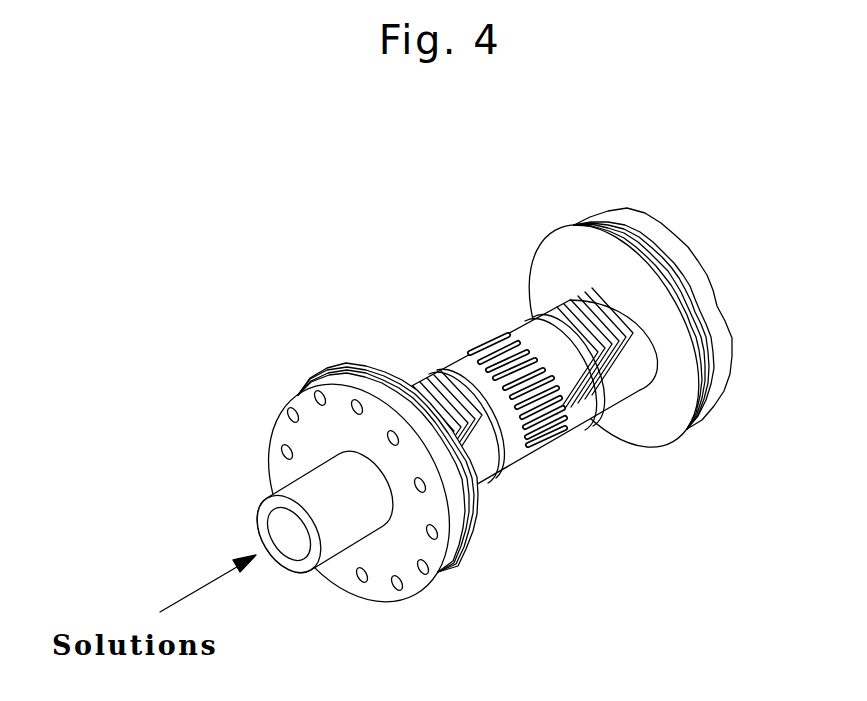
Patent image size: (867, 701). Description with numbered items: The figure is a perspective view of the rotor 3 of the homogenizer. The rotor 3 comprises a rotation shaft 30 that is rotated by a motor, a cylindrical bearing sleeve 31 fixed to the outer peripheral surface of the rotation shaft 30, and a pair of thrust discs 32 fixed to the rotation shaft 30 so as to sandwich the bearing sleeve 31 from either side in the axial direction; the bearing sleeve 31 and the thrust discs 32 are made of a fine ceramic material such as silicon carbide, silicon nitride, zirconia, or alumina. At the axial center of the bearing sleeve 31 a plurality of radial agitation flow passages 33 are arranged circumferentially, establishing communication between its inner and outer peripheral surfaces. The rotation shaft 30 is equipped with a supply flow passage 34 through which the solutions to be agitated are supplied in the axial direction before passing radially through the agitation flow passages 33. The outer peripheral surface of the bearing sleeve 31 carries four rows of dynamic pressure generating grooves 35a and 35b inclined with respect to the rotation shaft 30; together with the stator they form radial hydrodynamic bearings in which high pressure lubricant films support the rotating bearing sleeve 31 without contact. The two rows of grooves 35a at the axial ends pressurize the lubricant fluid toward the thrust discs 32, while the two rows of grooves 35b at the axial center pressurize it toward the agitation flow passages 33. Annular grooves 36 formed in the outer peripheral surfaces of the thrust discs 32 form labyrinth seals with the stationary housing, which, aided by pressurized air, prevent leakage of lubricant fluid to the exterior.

The rotor 3 is at (258, 390).
The rotation shaft 30 is at (250, 517).
The bearing sleeve 31 is at (574, 422).
The thrust disc 32 is at (723, 347).
The agitation flow passage 33 is at (505, 332).
The supply flow passage 34 is at (295, 550).
The dynamic pressure generating groove 35a is at (487, 483).
The dynamic pressure generating groove 35b is at (447, 377).
The annular groove 36 is at (352, 365).